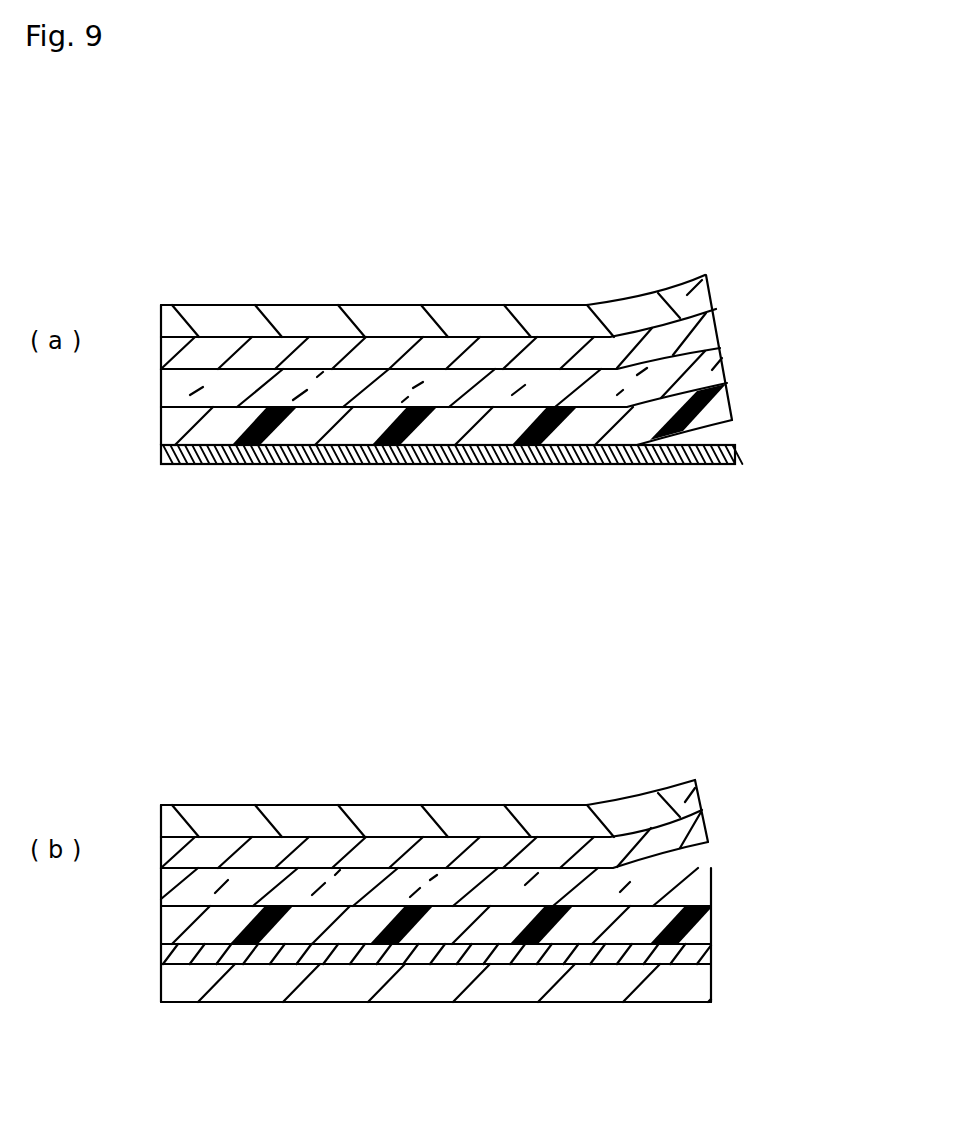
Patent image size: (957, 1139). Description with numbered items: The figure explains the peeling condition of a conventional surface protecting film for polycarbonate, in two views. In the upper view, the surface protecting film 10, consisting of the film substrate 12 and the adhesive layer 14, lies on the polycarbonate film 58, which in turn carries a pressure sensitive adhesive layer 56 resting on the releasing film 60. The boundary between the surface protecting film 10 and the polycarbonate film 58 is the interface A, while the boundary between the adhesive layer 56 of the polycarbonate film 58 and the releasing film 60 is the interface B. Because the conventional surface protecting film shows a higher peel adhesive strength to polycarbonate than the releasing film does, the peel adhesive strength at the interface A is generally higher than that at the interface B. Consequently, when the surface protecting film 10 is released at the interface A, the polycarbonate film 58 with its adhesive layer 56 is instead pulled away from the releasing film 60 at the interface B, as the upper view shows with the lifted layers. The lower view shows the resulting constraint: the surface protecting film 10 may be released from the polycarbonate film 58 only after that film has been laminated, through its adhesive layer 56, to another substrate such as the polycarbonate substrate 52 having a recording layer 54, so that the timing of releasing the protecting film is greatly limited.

The surface protecting film 10 is at (800, 220).
The film substrate 12 is at (707, 275).
The adhesive layer 14 is at (712, 310).
The polycarbonate film 58 is at (720, 363).
The adhesive layer 56 is at (727, 402).
The releasing film 60 is at (733, 465).
The recording layer 54 is at (712, 955).
The polycarbonate substrate 52 is at (712, 987).
The interface A is at (745, 340).
The interface B is at (748, 433).